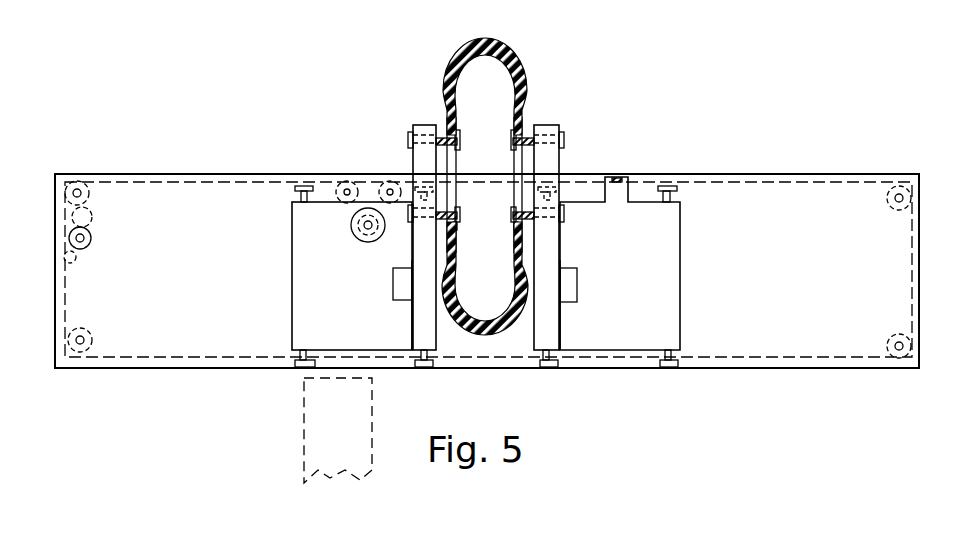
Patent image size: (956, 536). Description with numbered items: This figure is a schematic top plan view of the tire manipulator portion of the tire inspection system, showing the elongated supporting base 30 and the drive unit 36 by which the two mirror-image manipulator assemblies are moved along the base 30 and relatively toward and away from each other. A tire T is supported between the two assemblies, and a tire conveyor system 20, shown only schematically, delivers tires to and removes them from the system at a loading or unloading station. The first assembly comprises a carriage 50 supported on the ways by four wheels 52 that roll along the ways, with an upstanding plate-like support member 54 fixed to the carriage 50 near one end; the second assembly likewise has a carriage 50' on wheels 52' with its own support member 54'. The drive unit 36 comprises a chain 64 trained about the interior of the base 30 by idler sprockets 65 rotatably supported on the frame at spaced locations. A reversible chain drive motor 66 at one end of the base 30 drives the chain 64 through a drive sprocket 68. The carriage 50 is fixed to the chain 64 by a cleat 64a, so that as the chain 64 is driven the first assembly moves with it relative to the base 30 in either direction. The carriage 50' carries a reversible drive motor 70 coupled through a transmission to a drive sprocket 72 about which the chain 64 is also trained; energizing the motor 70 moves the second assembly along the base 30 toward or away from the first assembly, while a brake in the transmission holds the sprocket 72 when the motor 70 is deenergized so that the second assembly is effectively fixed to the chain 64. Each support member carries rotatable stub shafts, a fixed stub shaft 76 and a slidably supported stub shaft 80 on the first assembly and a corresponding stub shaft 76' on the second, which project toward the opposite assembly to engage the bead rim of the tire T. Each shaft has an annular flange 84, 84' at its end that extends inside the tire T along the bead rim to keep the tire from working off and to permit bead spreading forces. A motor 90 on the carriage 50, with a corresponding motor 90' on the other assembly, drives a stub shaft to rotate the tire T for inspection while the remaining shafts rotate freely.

The tire conveyor system 20 is at (300, 418).
The supporting base 30 is at (750, 172).
The drive unit 36 is at (165, 172).
The carriage 50 is at (620, 263).
The carriage 50' is at (352, 276).
The wheels 52 is at (563, 260).
The wheels 52' is at (345, 291).
The support member 54 is at (588, 305).
The support member 54' is at (396, 305).
The chain 64 is at (225, 180).
The cleat 64a is at (612, 178).
The idler sprockets 65 is at (80, 181).
The chain drive motor 66 is at (97, 221).
The drive sprocket 68 is at (90, 246).
The drive motor 70 is at (355, 240).
The drive sprocket 72 is at (351, 222).
The stub shaft 76 is at (541, 211).
The stub shaft 76' is at (422, 211).
The stub shaft 80 is at (458, 220).
The annular flange 84 is at (501, 176).
The annular flange 84' is at (467, 153).
The motor 90 is at (586, 261).
The motor 90' is at (383, 298).
The tire T is at (452, 52).